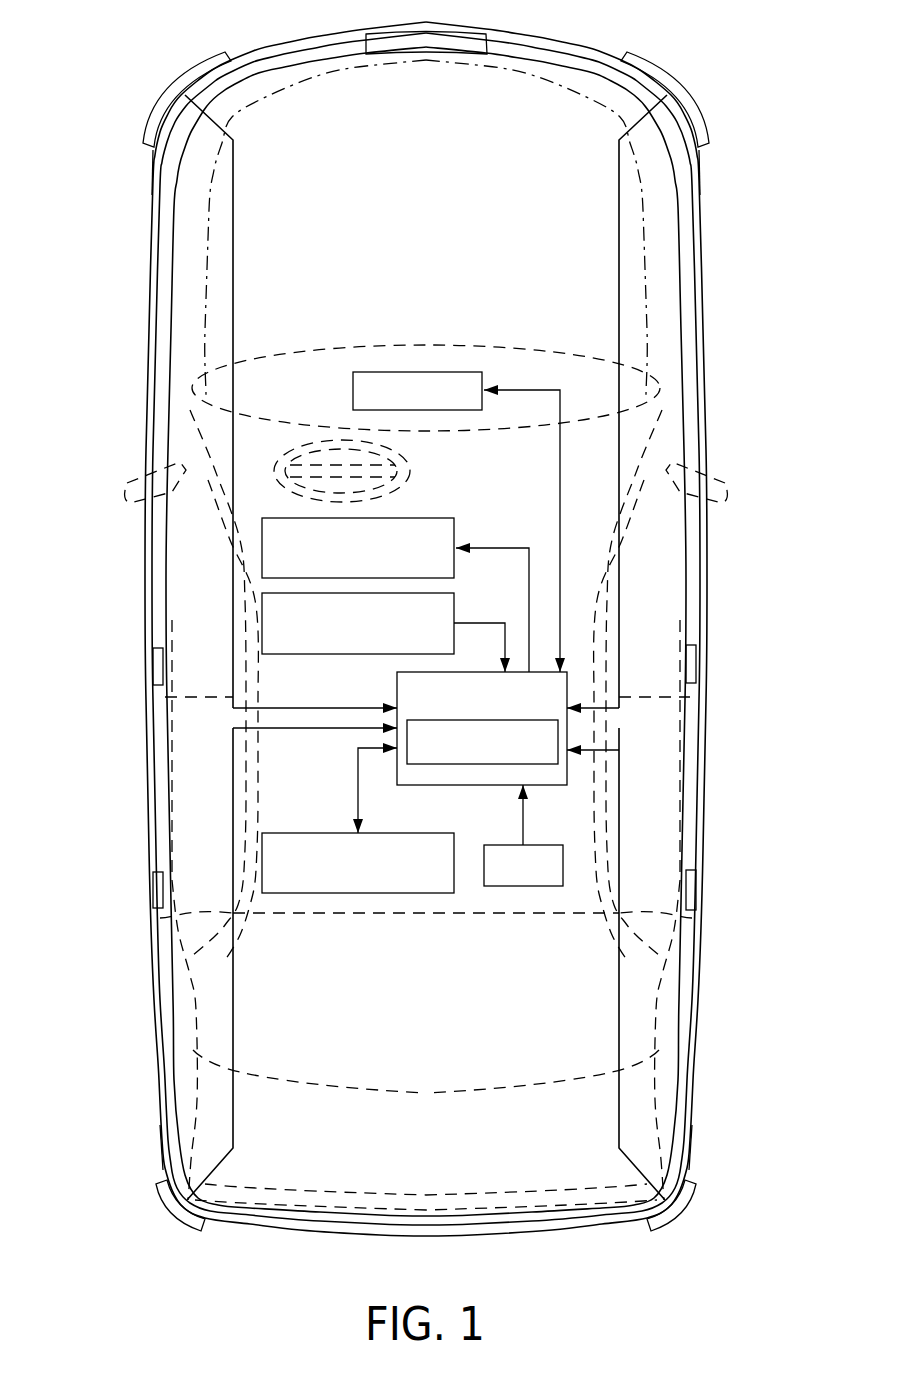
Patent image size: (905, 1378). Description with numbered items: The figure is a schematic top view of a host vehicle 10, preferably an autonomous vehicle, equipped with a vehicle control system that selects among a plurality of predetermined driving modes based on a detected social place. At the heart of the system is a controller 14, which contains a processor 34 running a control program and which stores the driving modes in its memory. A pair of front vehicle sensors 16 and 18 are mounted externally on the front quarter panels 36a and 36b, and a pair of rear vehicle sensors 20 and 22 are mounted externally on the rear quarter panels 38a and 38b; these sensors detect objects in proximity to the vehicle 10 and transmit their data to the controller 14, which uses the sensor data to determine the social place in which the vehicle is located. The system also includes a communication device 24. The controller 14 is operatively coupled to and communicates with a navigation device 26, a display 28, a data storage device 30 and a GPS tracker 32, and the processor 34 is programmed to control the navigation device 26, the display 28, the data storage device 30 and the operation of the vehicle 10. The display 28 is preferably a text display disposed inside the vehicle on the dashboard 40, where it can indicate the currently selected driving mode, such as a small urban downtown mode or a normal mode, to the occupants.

The host vehicle 10 is at (770, 478).
The controller 14 is at (397, 690).
The front vehicle sensor 16 is at (170, 80).
The front vehicle sensor 18 is at (682, 80).
The rear vehicle sensor 20 is at (168, 1218).
The rear vehicle sensor 22 is at (684, 1218).
The communication device 24 is at (456, 606).
The navigation device 26 is at (456, 530).
The display 28 is at (418, 372).
The data storage device 30 is at (360, 893).
The GPS tracker 32 is at (523, 886).
The processor 34 is at (558, 733).
The front quarter panel 36a is at (152, 172).
The front quarter panel 36b is at (700, 172).
The rear quarter panel 38a is at (163, 1152).
The rear quarter panel 38b is at (690, 1152).
The dashboard 40 is at (298, 386).